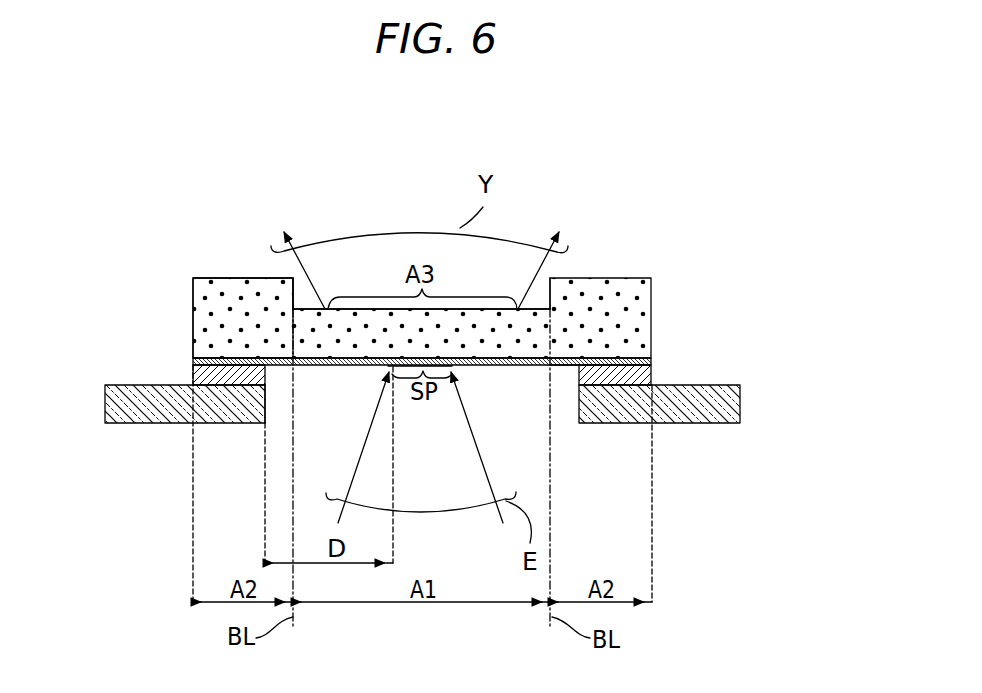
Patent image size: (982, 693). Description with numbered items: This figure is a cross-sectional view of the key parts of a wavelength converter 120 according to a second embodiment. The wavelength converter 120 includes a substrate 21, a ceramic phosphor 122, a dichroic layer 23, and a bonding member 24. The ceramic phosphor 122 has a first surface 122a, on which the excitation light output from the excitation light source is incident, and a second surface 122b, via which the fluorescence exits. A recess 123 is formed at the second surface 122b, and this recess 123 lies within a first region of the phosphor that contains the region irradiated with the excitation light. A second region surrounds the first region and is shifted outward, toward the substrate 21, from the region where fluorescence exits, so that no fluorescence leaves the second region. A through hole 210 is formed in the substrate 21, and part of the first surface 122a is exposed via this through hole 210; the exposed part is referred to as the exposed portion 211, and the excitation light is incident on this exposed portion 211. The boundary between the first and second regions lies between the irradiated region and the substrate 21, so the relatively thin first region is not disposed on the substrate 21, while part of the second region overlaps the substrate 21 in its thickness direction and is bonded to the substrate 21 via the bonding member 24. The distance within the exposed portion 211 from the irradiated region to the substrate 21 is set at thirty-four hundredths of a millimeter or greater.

The wavelength converter 120 is at (636, 162).
The ceramic phosphor 122 is at (658, 293).
The first surface 122a is at (565, 368).
The second surface 122b is at (233, 278).
The recess 123 is at (549, 279).
The dichroic layer 23 is at (652, 359).
The bonding member 24 is at (652, 378).
The substrate 21 is at (706, 418).
The through hole 210 is at (265, 410).
The exposed portion 211 is at (496, 374).